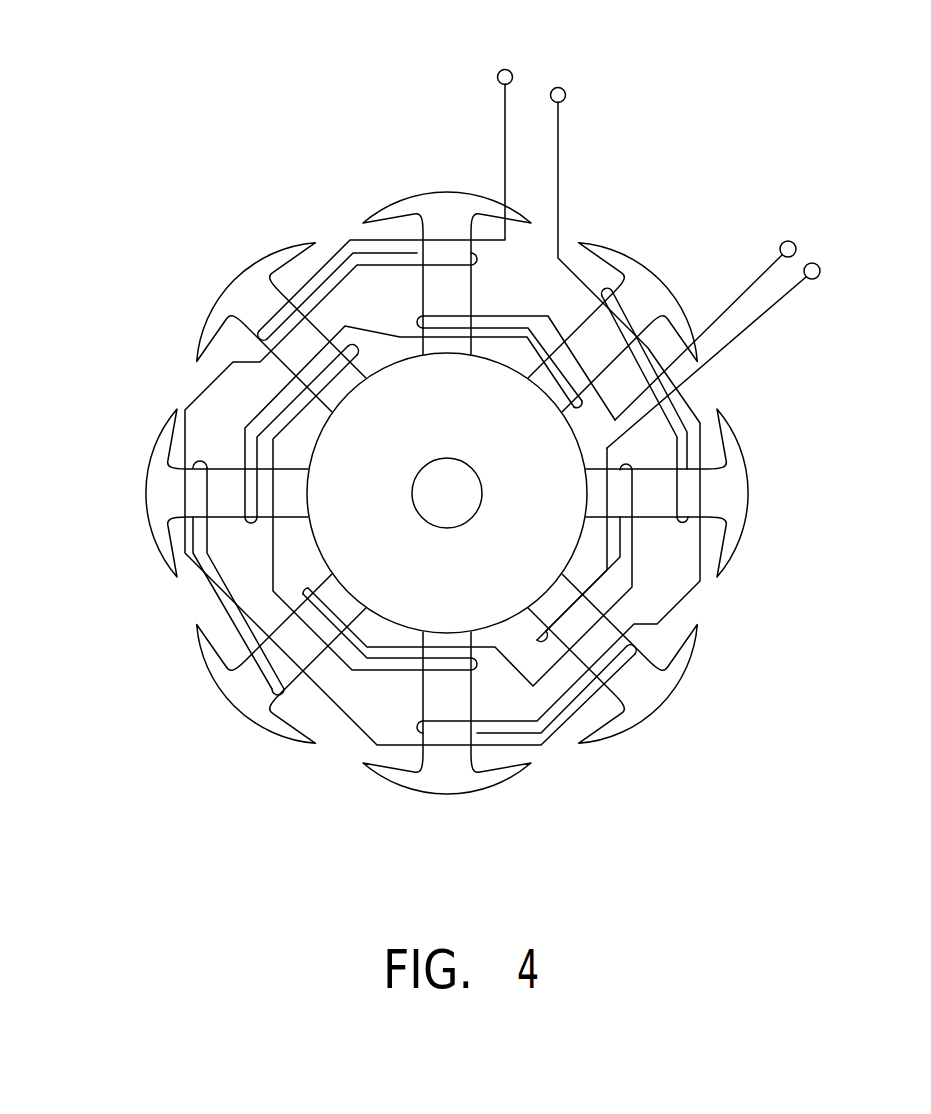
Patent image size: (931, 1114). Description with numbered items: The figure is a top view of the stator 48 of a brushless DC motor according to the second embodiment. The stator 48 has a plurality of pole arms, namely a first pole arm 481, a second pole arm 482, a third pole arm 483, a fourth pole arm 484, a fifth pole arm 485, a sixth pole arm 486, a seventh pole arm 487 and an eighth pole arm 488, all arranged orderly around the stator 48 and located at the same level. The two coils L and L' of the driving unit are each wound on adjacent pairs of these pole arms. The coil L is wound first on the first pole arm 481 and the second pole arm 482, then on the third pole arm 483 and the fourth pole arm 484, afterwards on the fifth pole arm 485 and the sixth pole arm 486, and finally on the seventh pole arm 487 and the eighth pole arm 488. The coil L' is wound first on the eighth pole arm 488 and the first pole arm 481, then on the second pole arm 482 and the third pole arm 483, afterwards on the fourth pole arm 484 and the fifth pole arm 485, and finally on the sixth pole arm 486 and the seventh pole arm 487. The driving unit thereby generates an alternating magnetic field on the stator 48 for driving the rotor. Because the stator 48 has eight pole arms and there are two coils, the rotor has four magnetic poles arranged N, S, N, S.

The stator 48 is at (72, 64).
The first pole arm 481 is at (437, 200).
The second pole arm 482 is at (248, 283).
The third pole arm 483 is at (152, 498).
The fourth pole arm 484 is at (228, 700).
The fifth pole arm 485 is at (446, 796).
The sixth pole arm 486 is at (655, 700).
The seventh pole arm 487 is at (728, 496).
The eighth pole arm 488 is at (668, 296).